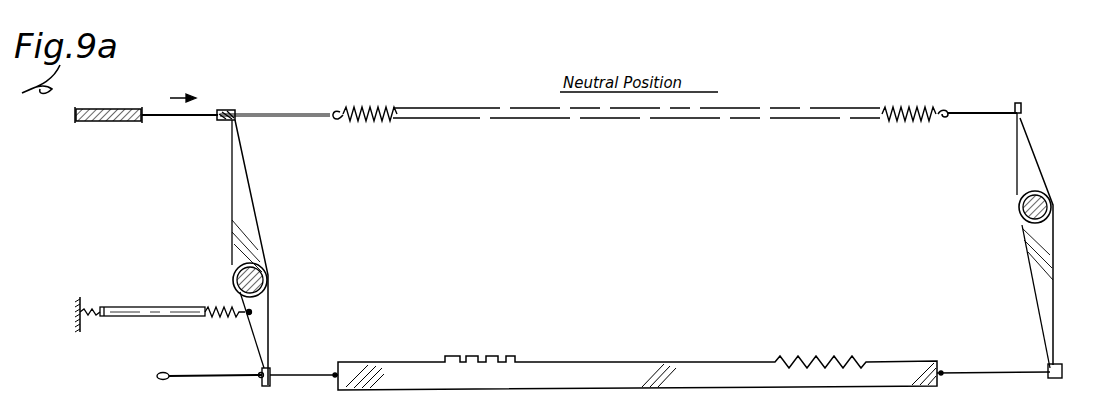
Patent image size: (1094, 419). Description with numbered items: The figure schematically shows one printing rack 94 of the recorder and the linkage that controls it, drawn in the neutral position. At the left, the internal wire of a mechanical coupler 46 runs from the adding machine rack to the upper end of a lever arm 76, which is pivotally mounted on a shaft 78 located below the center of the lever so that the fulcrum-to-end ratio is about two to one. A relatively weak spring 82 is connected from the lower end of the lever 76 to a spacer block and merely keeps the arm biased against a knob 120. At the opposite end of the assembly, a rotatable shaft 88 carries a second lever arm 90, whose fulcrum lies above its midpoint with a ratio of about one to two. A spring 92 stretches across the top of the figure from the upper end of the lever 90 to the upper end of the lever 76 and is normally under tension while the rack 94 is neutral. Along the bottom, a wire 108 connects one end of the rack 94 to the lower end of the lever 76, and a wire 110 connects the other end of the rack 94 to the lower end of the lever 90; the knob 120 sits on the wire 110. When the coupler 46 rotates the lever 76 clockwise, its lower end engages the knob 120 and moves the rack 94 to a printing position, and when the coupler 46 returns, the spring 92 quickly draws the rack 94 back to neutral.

The mechanical coupler 46 is at (140, 120).
The lever arm 76 is at (245, 210).
The shaft 78 is at (268, 276).
The spring 82 is at (230, 310).
The rotatable shaft 88 is at (1030, 200).
The lever arm 90 is at (1039, 251).
The spring 92 is at (372, 108).
The printing rack 94 is at (737, 378).
The wire 108 is at (1005, 378).
The wire 110 is at (312, 378).
The knob 120 is at (258, 385).